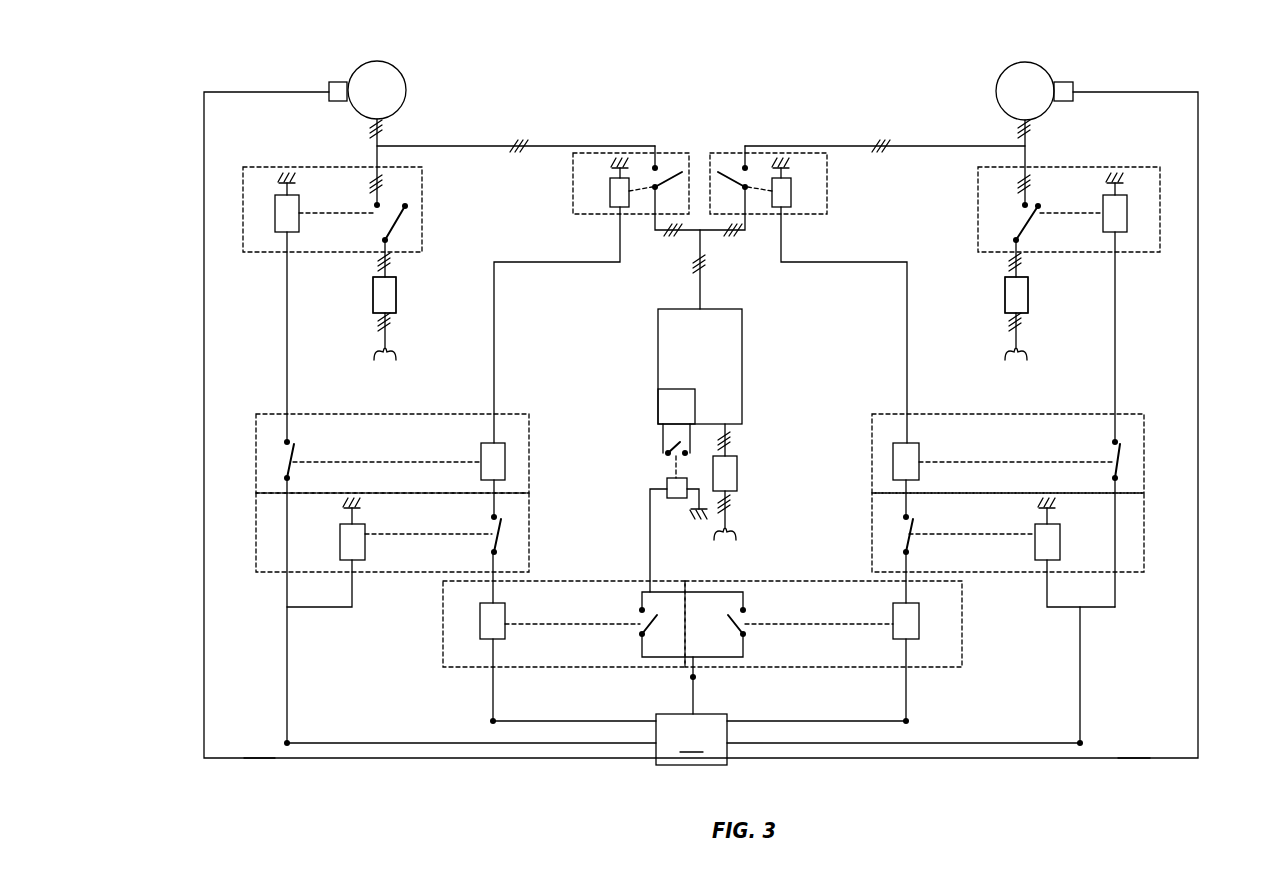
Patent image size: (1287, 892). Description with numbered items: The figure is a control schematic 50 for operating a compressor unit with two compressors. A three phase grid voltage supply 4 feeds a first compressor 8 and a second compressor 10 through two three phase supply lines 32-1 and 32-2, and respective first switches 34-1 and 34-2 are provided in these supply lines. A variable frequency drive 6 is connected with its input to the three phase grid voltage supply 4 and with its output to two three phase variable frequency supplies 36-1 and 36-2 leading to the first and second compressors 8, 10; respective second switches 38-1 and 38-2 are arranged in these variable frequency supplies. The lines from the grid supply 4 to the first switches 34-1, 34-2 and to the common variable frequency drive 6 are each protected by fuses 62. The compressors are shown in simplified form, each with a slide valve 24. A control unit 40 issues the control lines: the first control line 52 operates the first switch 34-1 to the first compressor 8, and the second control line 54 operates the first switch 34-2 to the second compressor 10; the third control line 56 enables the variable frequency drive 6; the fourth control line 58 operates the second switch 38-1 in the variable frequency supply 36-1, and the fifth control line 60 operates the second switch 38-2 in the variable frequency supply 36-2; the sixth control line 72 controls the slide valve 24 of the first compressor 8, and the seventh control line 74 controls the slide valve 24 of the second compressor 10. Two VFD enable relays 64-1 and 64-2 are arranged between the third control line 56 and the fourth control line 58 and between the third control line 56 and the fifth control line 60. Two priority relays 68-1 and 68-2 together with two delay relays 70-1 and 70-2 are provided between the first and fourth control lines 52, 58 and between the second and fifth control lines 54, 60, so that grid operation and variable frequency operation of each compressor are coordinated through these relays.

The three phase grid voltage supply 4 is at (376, 351).
The variable frequency drive 6 is at (742, 378).
The first compressor 8 is at (405, 97).
The second compressor 10 is at (996, 95).
The slide valve 24 is at (329, 88).
The three phase supply line 32-1 is at (380, 266).
The three phase supply line 32-2 is at (1021, 266).
The first switch 34-1 is at (355, 166).
The first switch 34-2 is at (1097, 166).
The three phase variable frequency supply 36-1 is at (605, 152).
The three phase variable frequency supply 36-2 is at (792, 152).
The second switch 38-1 is at (670, 152).
The second switch 38-2 is at (728, 152).
The control unit 40 is at (683, 739).
The control schematic 50 is at (261, 130).
The first control line 52 is at (290, 741).
The second control line 54 is at (1079, 741).
The third control line 56 is at (692, 679).
The fourth control line 58 is at (490, 722).
The fifth control line 60 is at (908, 721).
The fuse 62 is at (373, 300).
The VFD enable relay 64-1 is at (543, 581).
The VFD enable relay 64-2 is at (865, 581).
The priority relay 68-1 is at (256, 538).
The priority relay 68-2 is at (1144, 538).
The delay relay 70-1 is at (256, 470).
The delay relay 70-2 is at (1144, 470).
The sixth control line 72 is at (275, 757).
The seventh control line 74 is at (1118, 757).